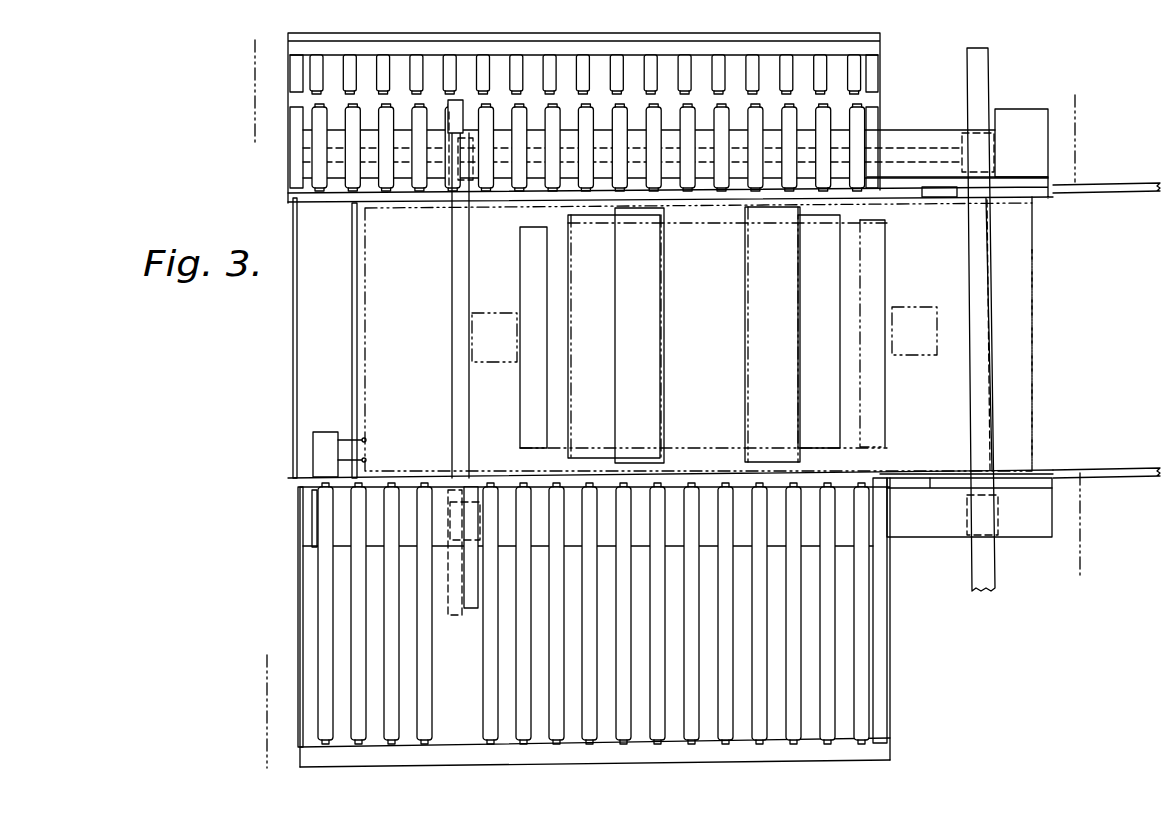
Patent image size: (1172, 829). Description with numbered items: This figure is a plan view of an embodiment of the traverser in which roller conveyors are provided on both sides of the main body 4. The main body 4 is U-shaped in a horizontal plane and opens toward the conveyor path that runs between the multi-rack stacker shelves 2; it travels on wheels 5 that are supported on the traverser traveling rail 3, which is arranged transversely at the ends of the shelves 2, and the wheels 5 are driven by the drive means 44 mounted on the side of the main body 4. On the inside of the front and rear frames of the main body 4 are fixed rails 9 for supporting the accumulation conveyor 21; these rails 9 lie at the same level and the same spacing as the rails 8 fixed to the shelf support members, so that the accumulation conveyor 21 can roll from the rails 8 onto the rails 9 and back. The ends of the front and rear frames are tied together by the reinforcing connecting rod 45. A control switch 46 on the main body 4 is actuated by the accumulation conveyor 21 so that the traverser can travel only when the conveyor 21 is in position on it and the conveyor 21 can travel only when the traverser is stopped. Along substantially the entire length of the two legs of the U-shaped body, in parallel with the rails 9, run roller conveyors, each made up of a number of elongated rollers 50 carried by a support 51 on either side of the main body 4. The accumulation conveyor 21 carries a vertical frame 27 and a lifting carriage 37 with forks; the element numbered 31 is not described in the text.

The multi-rack stacker shelves 2 is at (1082, 160).
The rail 3 is at (975, 67).
The main body 4 is at (253, 60).
The wheels 5 is at (962, 142).
The rails 8 is at (1115, 191).
The rails 9 is at (713, 193).
The accumulation conveyor 21 is at (1035, 345).
The vertical frame 27 is at (472, 335).
The shaft 31 is at (460, 415).
The carriage 37 is at (520, 442).
The drive means 44 is at (1018, 123).
The reinforcing connecting rod 45 is at (985, 238).
The control switch 46 is at (313, 440).
The elongated rollers 50 is at (868, 68).
The support 51 is at (886, 113).